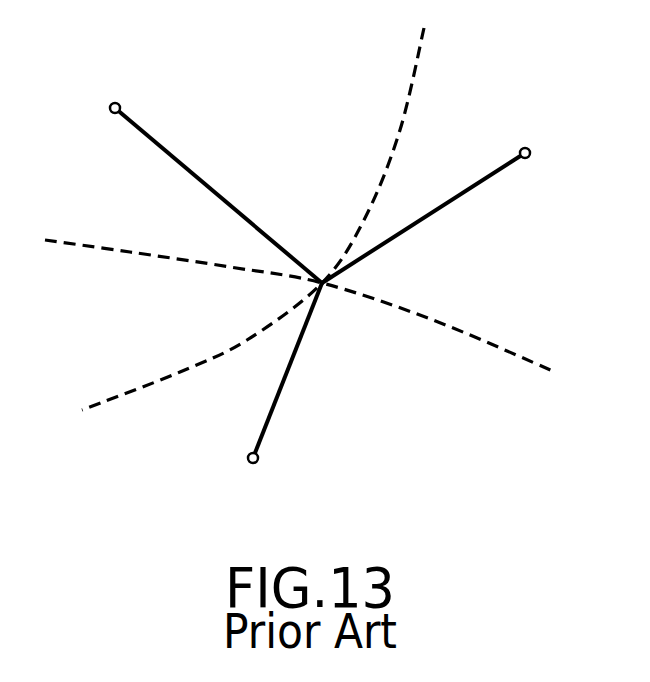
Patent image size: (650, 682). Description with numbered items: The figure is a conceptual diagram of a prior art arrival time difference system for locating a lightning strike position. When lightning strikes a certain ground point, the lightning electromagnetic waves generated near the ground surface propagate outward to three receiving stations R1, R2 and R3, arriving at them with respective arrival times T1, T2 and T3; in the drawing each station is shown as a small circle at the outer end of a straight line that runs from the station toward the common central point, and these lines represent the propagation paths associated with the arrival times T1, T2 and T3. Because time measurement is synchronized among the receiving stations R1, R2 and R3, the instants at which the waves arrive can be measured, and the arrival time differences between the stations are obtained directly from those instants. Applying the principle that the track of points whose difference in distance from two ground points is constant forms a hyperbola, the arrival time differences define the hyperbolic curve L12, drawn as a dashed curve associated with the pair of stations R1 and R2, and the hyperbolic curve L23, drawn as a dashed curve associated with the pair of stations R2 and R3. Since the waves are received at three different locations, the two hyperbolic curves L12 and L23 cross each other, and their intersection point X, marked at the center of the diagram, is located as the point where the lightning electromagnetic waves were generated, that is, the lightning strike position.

The hyperbolic curve L12 is at (417, 58).
The hyperbolic curve L23 is at (120, 252).
The arrival time T1 is at (167, 155).
The arrival time T2 is at (480, 179).
The arrival time T3 is at (277, 402).
The receiving station R1 is at (117, 103).
The receiving station R2 is at (528, 158).
The receiving station R3 is at (247, 458).
The intersection point X is at (325, 292).